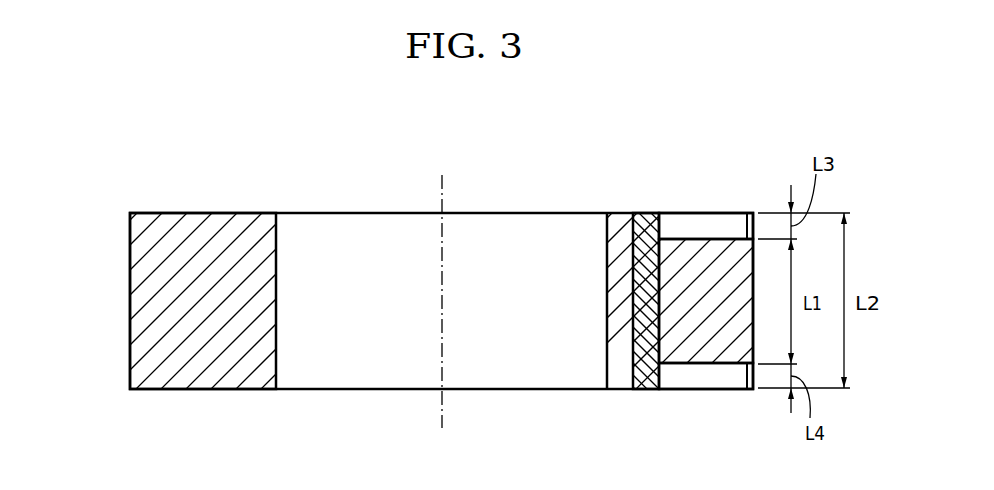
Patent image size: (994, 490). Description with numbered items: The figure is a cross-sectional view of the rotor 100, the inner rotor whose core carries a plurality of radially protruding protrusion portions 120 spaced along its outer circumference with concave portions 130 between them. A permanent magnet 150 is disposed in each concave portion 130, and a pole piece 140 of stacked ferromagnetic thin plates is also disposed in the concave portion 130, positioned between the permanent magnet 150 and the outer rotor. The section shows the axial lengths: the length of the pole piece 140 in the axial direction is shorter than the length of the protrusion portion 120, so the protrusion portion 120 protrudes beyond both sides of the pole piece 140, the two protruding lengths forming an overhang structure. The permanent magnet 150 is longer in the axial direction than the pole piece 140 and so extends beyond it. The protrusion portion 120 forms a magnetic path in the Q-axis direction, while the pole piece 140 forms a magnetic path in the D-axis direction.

The rotor 100 is at (766, 148).
The protrusion portion 120 is at (130, 341).
The concave portion 130 is at (693, 222).
The pole piece 140 is at (700, 350).
The permanent magnet 150 is at (646, 214).